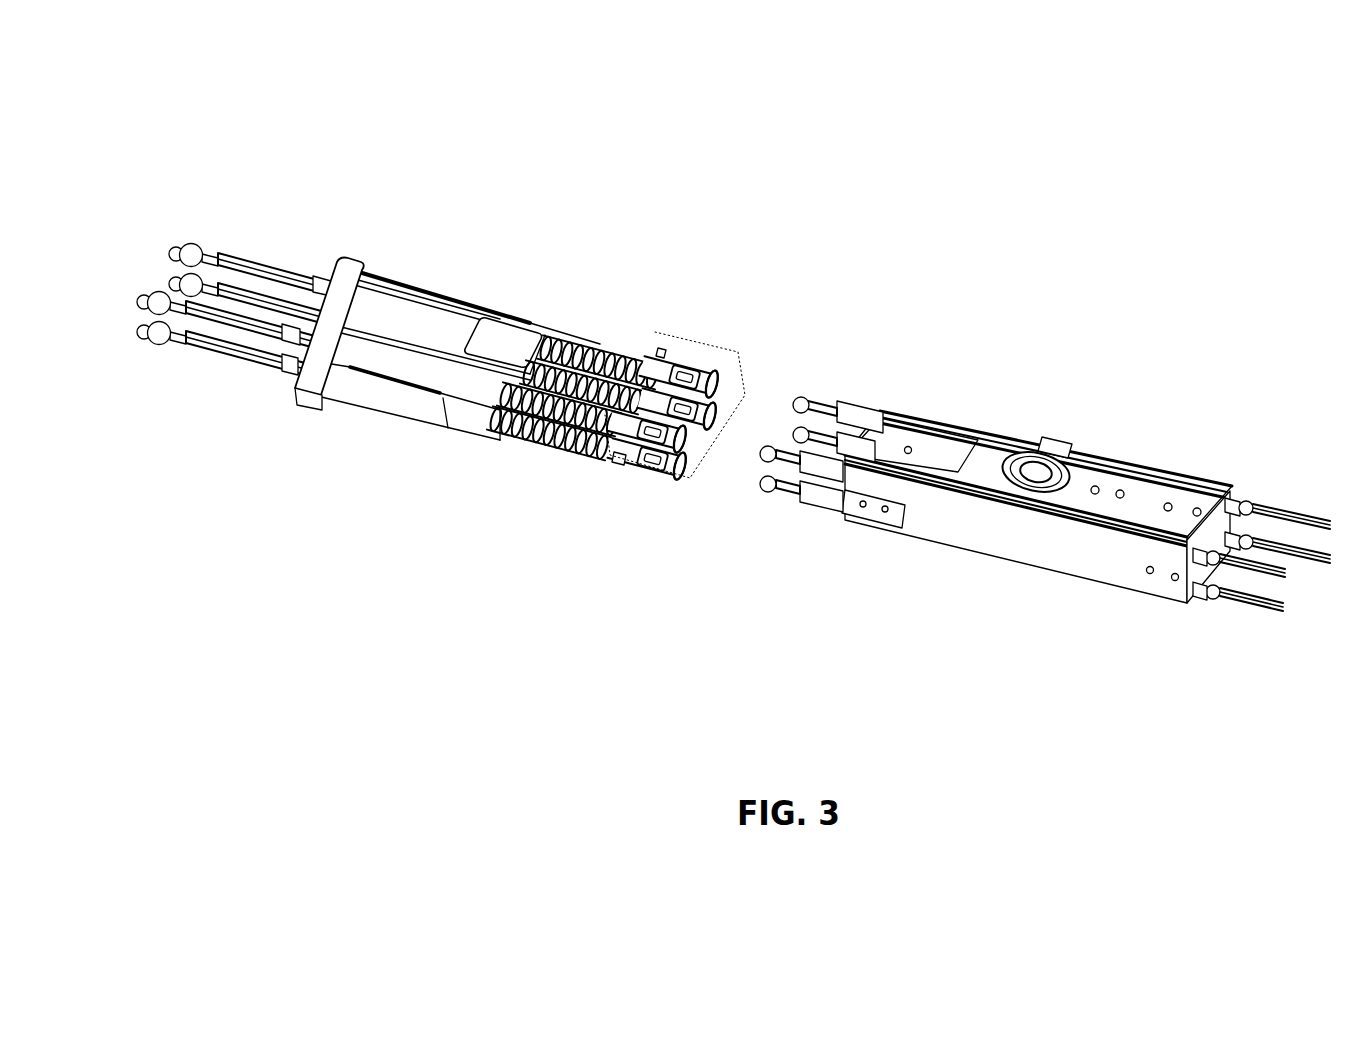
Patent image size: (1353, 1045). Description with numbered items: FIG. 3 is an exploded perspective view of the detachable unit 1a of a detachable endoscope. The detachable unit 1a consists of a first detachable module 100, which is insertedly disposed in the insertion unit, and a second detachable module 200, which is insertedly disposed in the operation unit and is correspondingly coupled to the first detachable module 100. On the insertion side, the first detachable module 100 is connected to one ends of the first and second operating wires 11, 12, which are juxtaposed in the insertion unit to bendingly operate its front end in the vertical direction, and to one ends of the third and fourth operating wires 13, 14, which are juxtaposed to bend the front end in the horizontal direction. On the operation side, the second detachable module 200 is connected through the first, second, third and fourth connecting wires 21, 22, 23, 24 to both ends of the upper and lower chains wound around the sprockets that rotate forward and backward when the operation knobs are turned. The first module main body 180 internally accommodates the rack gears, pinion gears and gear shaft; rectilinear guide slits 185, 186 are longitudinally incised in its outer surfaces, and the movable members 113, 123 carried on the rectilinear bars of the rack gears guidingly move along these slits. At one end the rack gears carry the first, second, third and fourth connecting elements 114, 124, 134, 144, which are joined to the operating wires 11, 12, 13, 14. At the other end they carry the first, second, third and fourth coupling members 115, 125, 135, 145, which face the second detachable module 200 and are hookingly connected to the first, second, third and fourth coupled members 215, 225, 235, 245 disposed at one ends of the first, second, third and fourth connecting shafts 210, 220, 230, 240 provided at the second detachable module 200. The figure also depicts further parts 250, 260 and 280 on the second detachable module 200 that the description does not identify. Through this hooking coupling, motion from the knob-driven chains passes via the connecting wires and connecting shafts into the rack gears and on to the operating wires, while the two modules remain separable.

The detachable unit 1a is at (862, 160).
The first detachable module 100 is at (1092, 375).
The second detachable module 200 is at (410, 248).
The first operating wire 11 is at (1266, 512).
The second operating wire 12 is at (1243, 586).
The third operating wire 13 is at (1288, 520).
The fourth operating wire 14 is at (1240, 598).
The first connecting wire 21 is at (221, 262).
The second connecting wire 22 is at (214, 323).
The third connecting wire 23 is at (262, 290).
The fourth connecting wire 24 is at (243, 352).
The movable member 113 is at (1060, 438).
The first connecting element 114 is at (1243, 493).
The first coupling member 115 is at (805, 398).
The movable member 123 is at (1022, 450).
The second connecting element 124 is at (1195, 568).
The second coupling member 125 is at (768, 448).
The third connecting element 134 is at (1258, 552).
The third coupling member 135 is at (795, 440).
The fourth connecting element 144 is at (1198, 603).
The fourth coupling member 145 is at (771, 478).
The first module main body 180 is at (968, 546).
The rectilinear guide slit 185 is at (1198, 471).
The rectilinear guide slit 186 is at (1118, 495).
The first connecting shaft 210 is at (607, 335).
The first coupled member 215 is at (738, 352).
The second connecting shaft 220 is at (575, 445).
The second coupled member 225 is at (694, 442).
The third connecting shaft 230 is at (590, 337).
The third coupled member 235 is at (742, 380).
The fourth connecting shaft 240 is at (515, 440).
The fourth coupled member 245 is at (700, 472).
The plug housing 250 is at (455, 330).
The mounting bracket 260 is at (342, 262).
The cover window 280 is at (517, 304).